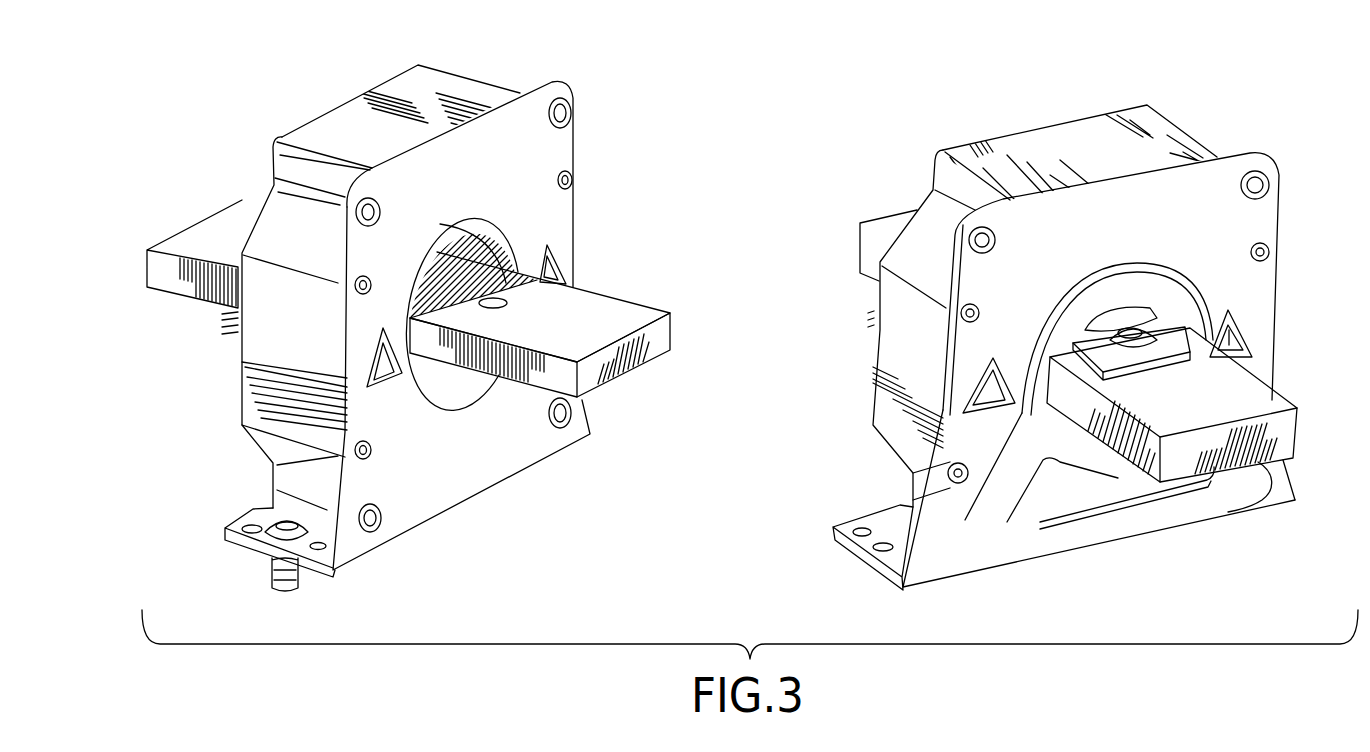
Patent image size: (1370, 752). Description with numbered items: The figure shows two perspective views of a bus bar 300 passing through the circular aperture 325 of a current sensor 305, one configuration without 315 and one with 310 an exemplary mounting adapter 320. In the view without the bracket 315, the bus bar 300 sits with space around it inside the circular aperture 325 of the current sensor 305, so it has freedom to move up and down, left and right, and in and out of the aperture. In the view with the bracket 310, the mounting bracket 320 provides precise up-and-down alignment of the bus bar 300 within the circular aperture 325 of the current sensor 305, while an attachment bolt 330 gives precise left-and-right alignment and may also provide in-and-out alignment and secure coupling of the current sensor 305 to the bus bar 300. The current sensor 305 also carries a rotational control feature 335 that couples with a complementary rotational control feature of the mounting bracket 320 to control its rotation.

The bus bar 300 is at (613, 367).
The current sensor 305 is at (550, 162).
The configuration with mounting adapter 310 is at (880, 177).
The configuration without mounting adapter 315 is at (220, 183).
The mounting adapter 320 is at (1228, 507).
The circular aperture 325 is at (443, 375).
The attachment bolt 330 is at (1146, 344).
The rotational control feature 335 is at (380, 530).